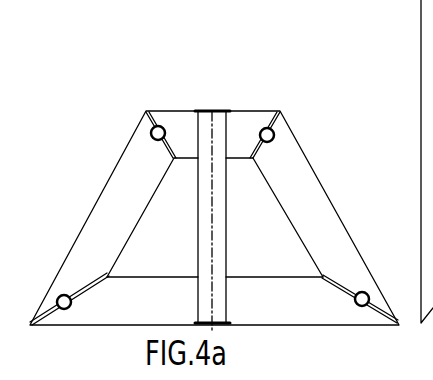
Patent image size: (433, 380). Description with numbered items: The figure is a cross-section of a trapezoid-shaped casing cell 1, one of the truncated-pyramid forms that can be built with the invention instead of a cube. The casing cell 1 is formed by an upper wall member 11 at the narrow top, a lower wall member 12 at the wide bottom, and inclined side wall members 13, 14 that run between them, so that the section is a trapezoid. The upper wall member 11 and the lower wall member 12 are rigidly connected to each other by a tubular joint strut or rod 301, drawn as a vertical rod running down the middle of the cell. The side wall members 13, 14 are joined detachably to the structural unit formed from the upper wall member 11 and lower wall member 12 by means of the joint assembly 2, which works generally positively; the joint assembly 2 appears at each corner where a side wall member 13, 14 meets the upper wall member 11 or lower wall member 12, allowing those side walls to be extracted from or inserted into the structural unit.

The casing cell 1 is at (253, 105).
The joint assembly 2 is at (155, 142).
The upper wall member 11 is at (175, 110).
The lower wall member 12 is at (307, 326).
The side wall member 13 is at (331, 197).
The side wall member 14 is at (91, 205).
The tubular joint strut 301 is at (223, 237).